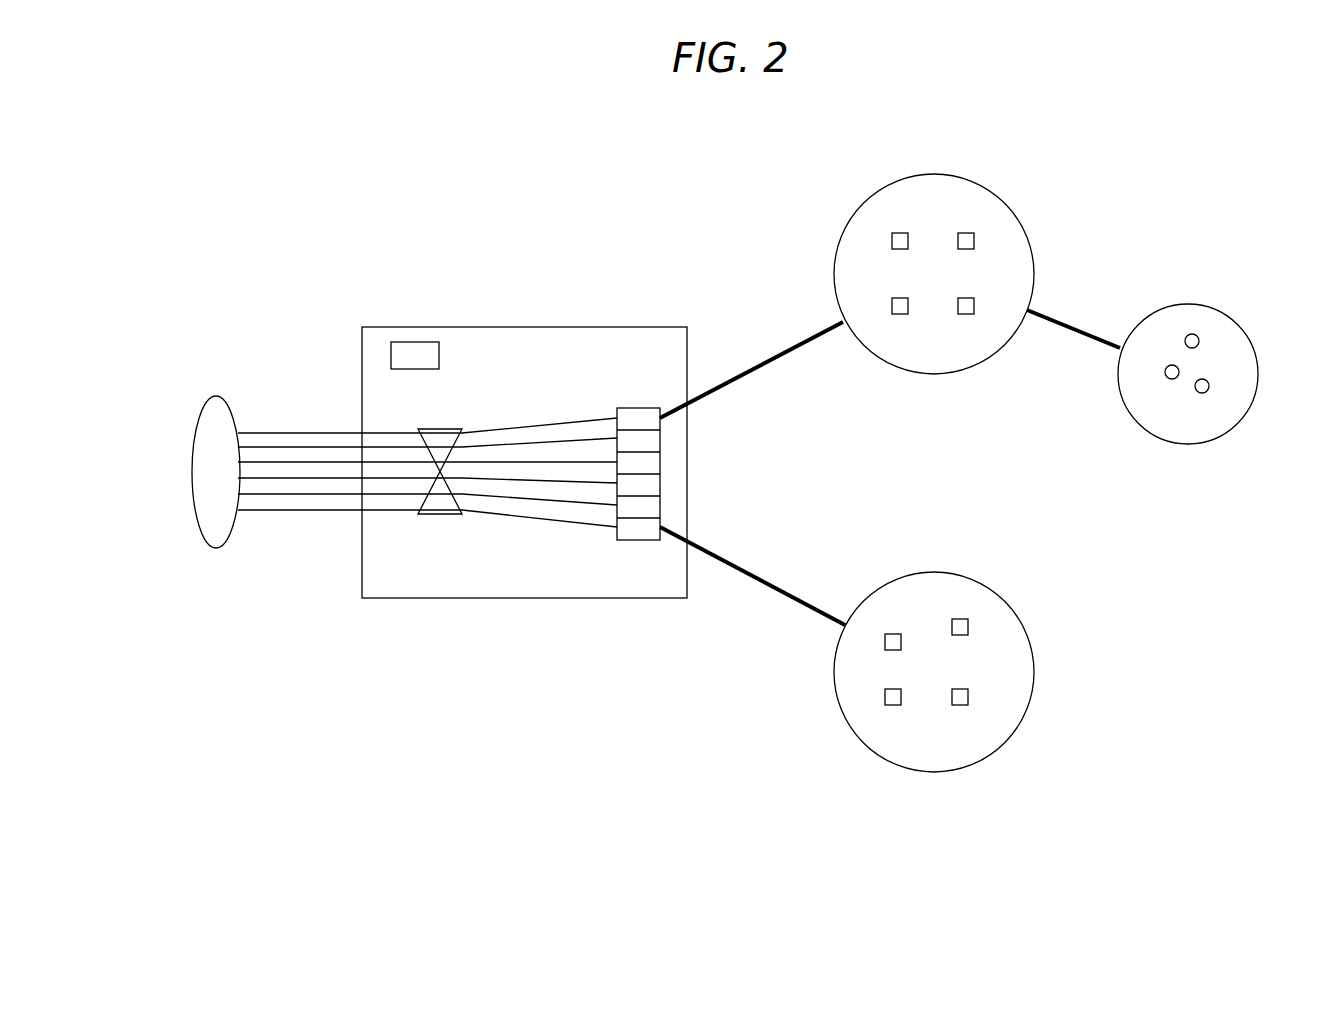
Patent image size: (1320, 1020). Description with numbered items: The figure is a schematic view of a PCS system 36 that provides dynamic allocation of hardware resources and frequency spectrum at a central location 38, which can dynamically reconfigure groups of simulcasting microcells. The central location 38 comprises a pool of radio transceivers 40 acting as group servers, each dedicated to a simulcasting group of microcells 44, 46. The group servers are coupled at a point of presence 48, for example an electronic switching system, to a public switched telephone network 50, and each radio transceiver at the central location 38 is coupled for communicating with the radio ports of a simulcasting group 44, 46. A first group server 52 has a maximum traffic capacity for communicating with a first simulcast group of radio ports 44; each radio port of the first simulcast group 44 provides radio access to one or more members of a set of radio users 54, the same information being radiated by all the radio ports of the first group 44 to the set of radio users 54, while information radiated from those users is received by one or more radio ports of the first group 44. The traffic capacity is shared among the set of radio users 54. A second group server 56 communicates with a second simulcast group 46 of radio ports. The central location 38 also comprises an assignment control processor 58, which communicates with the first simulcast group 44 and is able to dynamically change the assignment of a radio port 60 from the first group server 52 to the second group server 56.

The PCS system 36 is at (518, 750).
The central location 38 is at (379, 327).
The pool of radio transceivers 40 is at (631, 541).
The first simulcast group of radio ports 44 is at (982, 174).
The second simulcast group of radio ports 46 is at (1035, 727).
The point of presence 48 is at (440, 516).
The public switched telephone network 50 is at (200, 552).
The first group server 52 is at (630, 416).
The set of radio users 54 is at (1252, 345).
The second group server 56 is at (647, 530).
The assignment control processor 58 is at (416, 375).
The radio port 60 is at (966, 297).